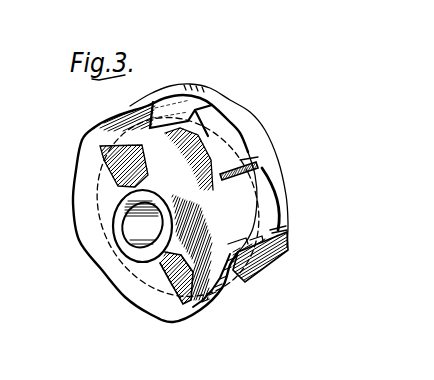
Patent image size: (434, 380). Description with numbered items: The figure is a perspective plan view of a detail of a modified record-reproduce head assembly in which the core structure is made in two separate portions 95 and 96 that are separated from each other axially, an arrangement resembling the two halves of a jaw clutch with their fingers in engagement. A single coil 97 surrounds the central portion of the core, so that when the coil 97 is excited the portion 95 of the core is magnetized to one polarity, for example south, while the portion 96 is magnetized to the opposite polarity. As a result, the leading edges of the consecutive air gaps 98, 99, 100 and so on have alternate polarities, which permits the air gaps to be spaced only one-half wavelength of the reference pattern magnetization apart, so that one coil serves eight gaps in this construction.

The core portion 95 is at (264, 144).
The core portion 96 is at (157, 208).
The coil 97 is at (178, 278).
The air gap 98 is at (190, 116).
The air gap 99 is at (268, 164).
The air gap 100 is at (258, 244).